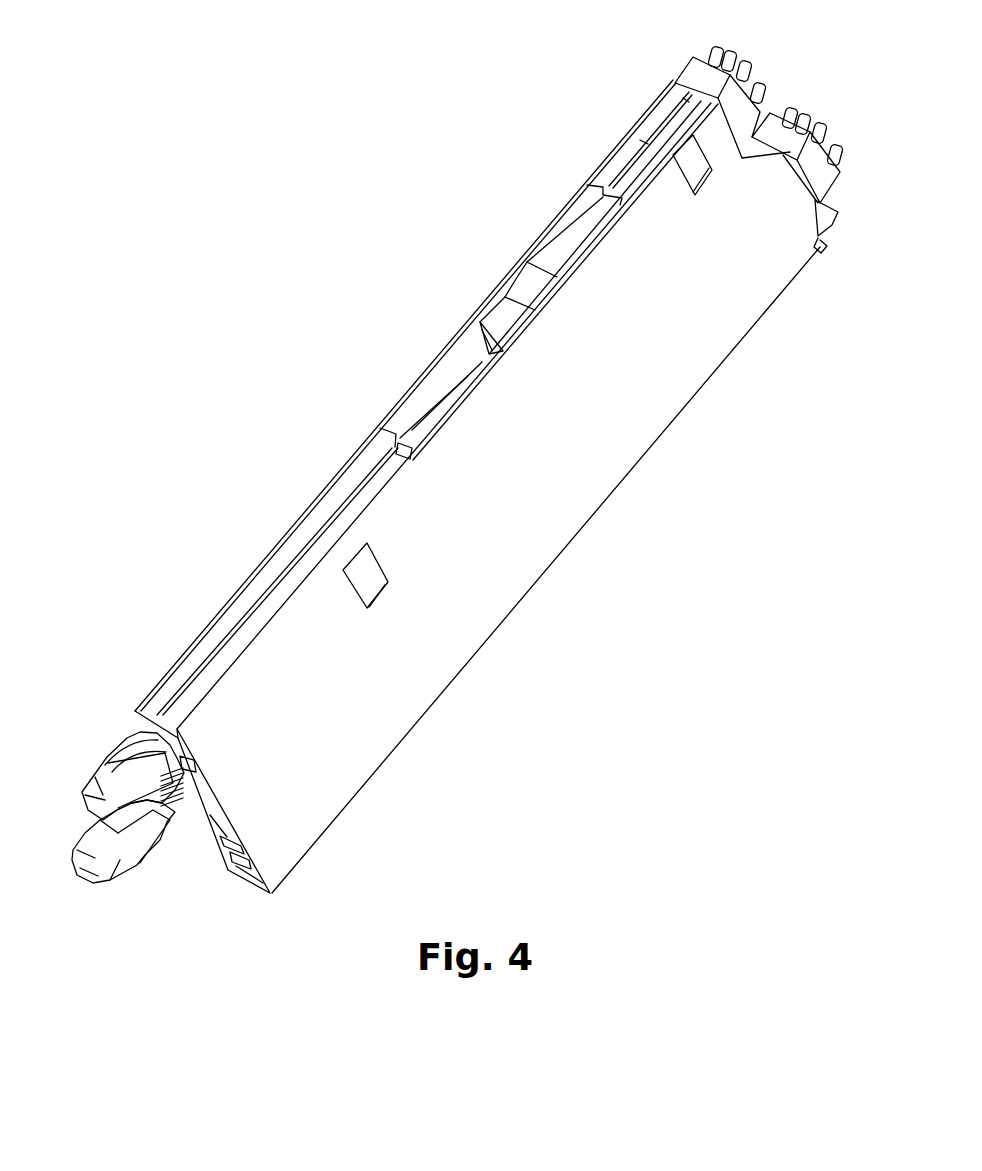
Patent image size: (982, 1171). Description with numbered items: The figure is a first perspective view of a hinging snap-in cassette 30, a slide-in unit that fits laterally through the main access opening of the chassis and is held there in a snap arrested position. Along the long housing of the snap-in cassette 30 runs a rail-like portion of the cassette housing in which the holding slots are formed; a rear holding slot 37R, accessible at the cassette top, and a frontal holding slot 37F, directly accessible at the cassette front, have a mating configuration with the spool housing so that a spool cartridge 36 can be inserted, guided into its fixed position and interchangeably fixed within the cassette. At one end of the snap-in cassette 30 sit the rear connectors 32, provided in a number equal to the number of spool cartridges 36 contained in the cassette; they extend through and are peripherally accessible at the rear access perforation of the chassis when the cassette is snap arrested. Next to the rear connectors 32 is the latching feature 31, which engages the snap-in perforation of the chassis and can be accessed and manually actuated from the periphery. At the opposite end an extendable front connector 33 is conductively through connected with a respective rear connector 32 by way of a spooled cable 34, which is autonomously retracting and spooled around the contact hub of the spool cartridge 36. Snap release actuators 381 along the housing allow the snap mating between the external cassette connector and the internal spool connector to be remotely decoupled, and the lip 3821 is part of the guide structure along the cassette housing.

The snap-in cassette 30 is at (538, 742).
The latching feature 31 is at (819, 252).
The rear connector 32 is at (688, 62).
The extendable front connector 33 is at (125, 742).
The spooled cable 34 is at (415, 433).
The spool cartridge 36 is at (562, 247).
The rear holding slot 37R is at (427, 330).
The frontal holding slot 37F is at (193, 867).
The snap release actuator 381 is at (688, 157).
The guide groove lip 3821 is at (340, 495).